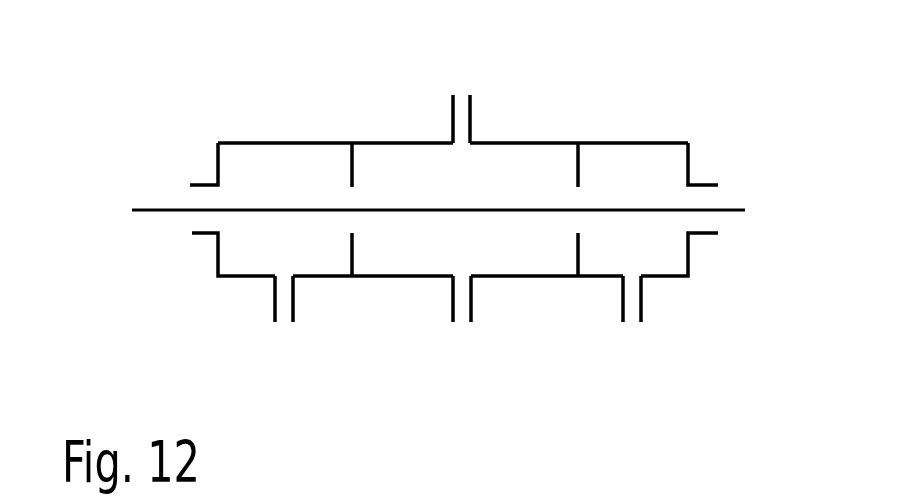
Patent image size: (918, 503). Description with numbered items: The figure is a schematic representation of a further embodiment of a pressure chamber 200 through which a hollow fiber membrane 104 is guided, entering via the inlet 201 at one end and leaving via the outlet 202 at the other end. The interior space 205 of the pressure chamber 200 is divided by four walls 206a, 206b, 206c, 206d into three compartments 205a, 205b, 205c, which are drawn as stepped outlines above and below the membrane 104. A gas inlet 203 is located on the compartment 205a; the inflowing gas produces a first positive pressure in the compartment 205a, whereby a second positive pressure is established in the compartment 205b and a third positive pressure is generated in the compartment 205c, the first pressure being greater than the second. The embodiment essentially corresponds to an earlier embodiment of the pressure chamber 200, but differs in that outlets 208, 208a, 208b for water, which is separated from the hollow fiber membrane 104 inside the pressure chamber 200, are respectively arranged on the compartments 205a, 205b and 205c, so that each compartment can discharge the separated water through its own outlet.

The hollow fiber membrane 104 is at (738, 212).
The pressure chamber 200 is at (500, 140).
The inlet 201 is at (195, 202).
The outlet 202 is at (715, 197).
The gas inlet 203 is at (462, 115).
The interior space 205 is at (257, 258).
The compartment 205a is at (423, 167).
The compartment 205b is at (665, 157).
The compartment 205c is at (288, 165).
The wall 206a is at (588, 158).
The wall 206b is at (577, 258).
The wall 206c is at (352, 257).
The wall 206d is at (353, 160).
The outlet for water 208 is at (465, 317).
The outlet for water 208a is at (630, 317).
The outlet for water 208b is at (285, 313).